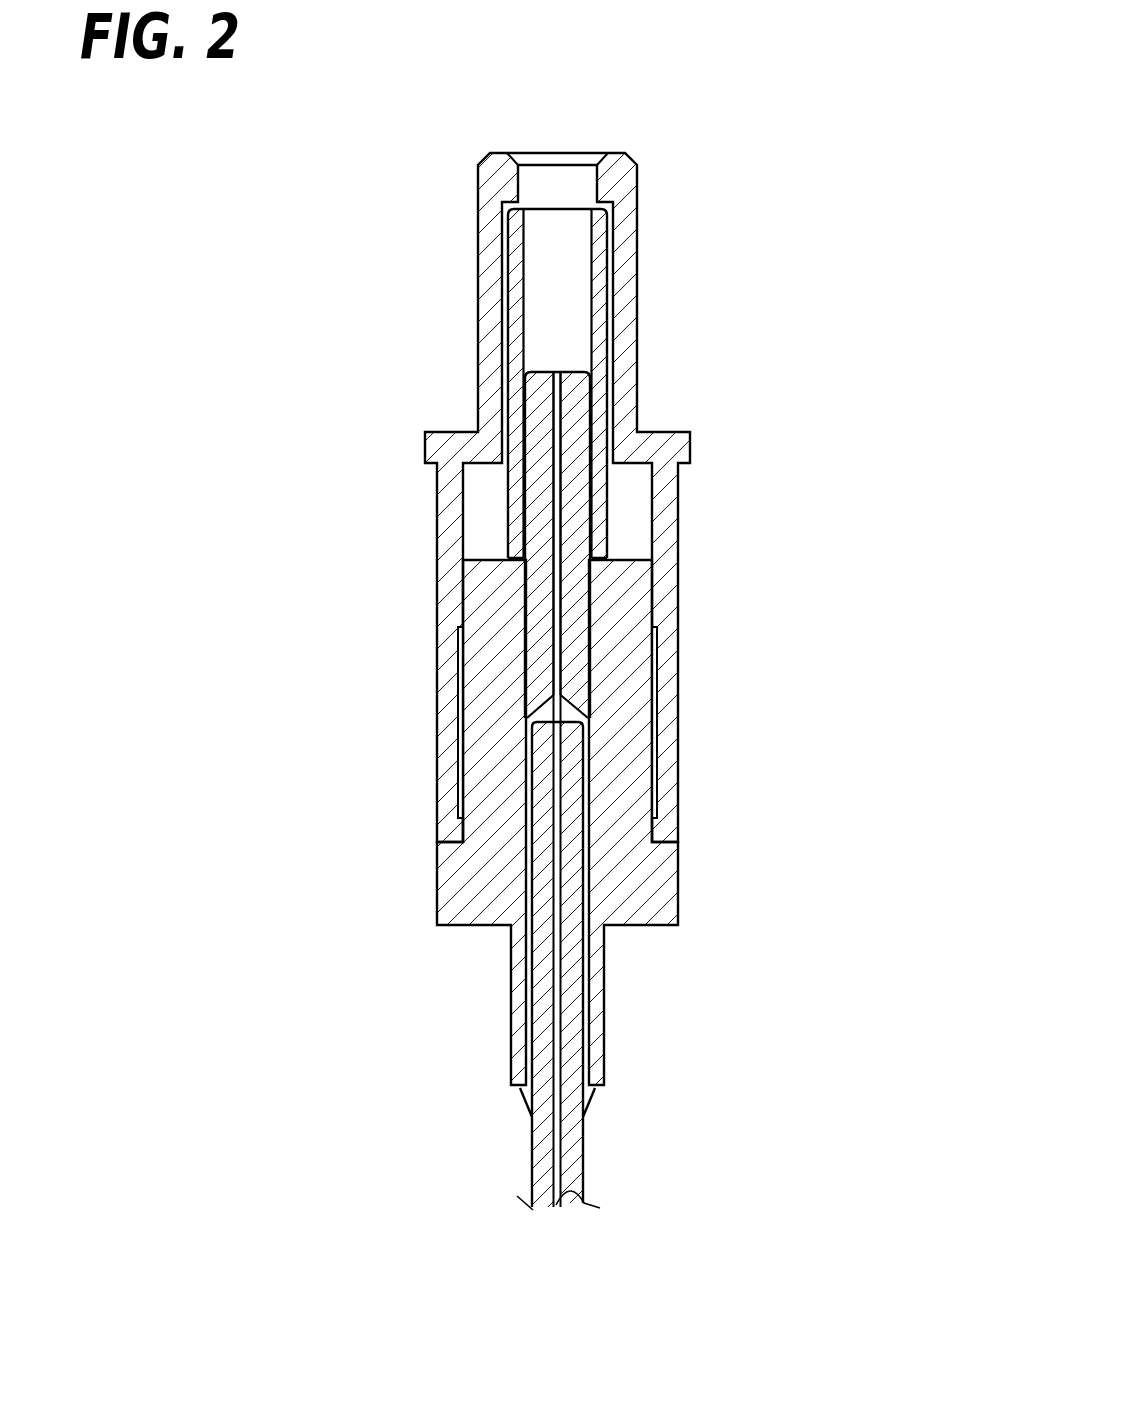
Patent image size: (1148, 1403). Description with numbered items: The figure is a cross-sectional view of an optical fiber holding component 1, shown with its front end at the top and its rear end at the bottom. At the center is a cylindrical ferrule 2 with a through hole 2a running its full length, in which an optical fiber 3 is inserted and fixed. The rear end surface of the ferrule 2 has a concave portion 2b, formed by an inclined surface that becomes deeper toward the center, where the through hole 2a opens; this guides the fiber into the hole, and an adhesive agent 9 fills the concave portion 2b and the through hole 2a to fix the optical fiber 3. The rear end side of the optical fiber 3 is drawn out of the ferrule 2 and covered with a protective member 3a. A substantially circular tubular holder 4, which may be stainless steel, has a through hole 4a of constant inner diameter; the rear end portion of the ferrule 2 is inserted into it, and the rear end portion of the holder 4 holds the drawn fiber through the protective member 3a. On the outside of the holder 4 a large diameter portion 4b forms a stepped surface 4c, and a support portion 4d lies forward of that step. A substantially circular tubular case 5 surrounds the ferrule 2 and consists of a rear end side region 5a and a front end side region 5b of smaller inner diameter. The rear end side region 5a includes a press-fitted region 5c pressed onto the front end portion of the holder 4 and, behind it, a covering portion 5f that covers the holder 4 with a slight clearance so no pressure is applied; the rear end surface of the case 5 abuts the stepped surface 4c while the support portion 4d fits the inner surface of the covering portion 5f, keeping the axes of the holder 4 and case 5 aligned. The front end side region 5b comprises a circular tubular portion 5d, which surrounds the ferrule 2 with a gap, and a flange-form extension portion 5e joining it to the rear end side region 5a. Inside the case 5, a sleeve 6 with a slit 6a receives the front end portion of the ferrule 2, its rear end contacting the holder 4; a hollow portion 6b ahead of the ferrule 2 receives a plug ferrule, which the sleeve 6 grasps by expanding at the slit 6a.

The optical fiber holding component 1 is at (372, 1019).
The ferrule 2 is at (566, 625).
The through hole 2a is at (558, 523).
The concave portion 2b is at (577, 708).
The optical fiber 3 is at (562, 568).
The protective member 3a is at (572, 985).
The holder 4 is at (630, 757).
The through hole 4a is at (592, 790).
The large diameter portion 4b is at (683, 875).
The stepped surface 4c is at (437, 847).
The support portion 4d is at (655, 825).
The case 5 is at (628, 363).
The rear end side region 5a is at (255, 468).
The front end side region 5b is at (255, 155).
The press-fitted region 5c is at (400, 562).
The circular tubular portion 5d is at (490, 329).
The extension portion 5e is at (440, 440).
The covering portion 5f is at (437, 753).
The sleeve 6 is at (515, 258).
The slit 6a is at (600, 308).
The hollow portion 6b is at (560, 245).
The adhesive agent 9 is at (525, 713).